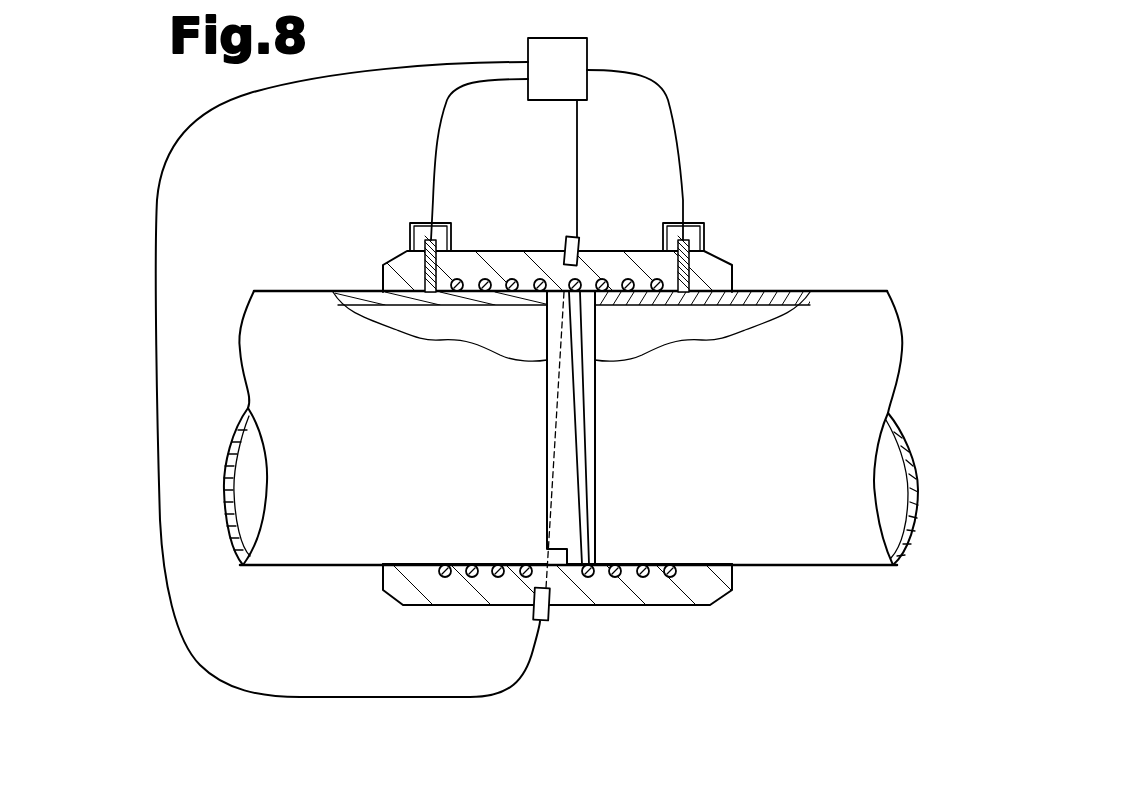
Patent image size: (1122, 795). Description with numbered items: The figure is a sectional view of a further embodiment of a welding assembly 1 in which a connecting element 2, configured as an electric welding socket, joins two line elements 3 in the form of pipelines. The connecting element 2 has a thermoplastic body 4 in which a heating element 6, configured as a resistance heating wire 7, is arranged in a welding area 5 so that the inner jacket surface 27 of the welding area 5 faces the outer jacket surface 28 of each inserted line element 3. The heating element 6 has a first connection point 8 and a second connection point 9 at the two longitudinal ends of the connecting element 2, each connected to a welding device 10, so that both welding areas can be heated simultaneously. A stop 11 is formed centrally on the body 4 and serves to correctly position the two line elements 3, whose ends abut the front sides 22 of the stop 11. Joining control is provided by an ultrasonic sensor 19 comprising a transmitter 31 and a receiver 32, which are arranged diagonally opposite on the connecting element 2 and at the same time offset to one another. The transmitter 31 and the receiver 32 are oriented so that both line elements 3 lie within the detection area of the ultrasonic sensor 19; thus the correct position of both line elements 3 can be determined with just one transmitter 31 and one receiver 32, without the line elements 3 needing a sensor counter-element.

The welding assembly 1 is at (925, 107).
The connecting element 2 is at (521, 178).
The line elements 3 is at (257, 266).
The thermoplastic body 4 is at (705, 263).
The welding area 5 is at (469, 539).
The heating element 6 is at (431, 584).
The resistance heating wire 7 is at (442, 576).
The first connection point 8 is at (697, 205).
The second connection point 9 is at (407, 211).
The welding device 10 is at (419, 367).
The stop 11 is at (544, 342).
The ultrasonic sensor 19 is at (594, 210).
The front side 22 is at (521, 289).
The inner jacket surface 27 is at (428, 551).
The outer jacket surface 28 is at (293, 567).
The transmitter 31 is at (578, 247).
The receiver 32 is at (534, 612).